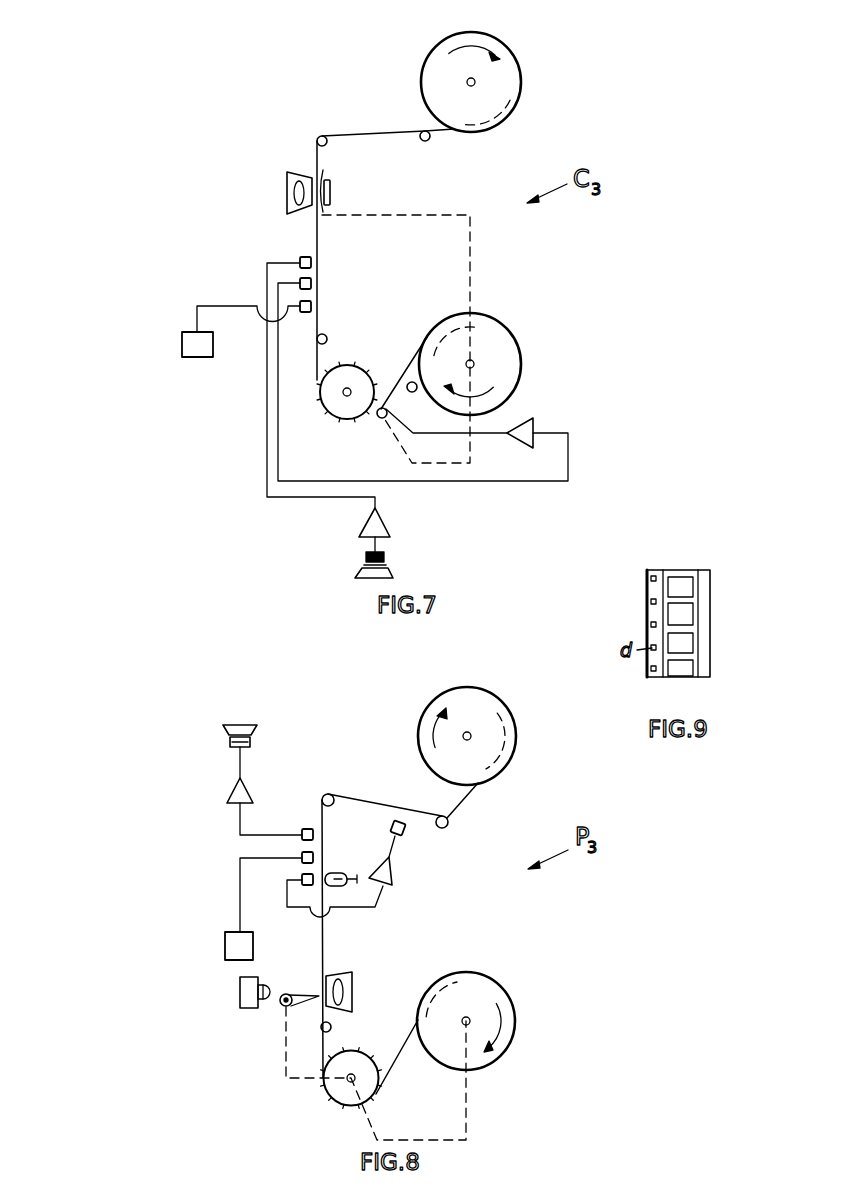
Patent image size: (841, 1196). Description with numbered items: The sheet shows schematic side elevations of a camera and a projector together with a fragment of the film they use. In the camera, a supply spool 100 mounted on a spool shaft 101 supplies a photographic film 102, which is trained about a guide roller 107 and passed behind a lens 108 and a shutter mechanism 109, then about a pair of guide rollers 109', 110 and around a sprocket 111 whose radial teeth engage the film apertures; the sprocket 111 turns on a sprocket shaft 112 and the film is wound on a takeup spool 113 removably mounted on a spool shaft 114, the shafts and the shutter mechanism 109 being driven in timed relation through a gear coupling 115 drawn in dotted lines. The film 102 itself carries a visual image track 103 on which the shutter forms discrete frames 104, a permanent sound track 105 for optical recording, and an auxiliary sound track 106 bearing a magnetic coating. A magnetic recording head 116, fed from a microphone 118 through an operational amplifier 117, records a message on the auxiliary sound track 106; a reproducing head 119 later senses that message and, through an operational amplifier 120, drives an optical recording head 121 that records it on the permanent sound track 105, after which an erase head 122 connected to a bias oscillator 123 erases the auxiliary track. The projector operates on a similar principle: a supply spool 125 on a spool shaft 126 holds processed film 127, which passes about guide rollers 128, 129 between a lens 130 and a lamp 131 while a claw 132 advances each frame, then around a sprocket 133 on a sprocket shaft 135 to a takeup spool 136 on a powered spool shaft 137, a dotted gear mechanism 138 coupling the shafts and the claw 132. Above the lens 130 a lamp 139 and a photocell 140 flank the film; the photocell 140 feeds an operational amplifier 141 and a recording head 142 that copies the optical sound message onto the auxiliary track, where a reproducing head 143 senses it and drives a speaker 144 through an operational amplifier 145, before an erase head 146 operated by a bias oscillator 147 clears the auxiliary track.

In FIG. 7, the supply spool 100 is at (497, 70).
In FIG. 7, the spool shaft 101 is at (467, 79).
In FIG. 7, the photographic film 102 is at (360, 137).
In FIG. 9, the photographic film 102 is at (710, 643).
In FIG. 9, the visual image track 103 is at (677, 668).
In FIG. 9, the frames 104 is at (680, 587).
In FIG. 9, the permanent sound track 105 is at (707, 580).
In FIG. 9, the auxiliary sound track 106 is at (663, 572).
In FIG. 7, the guide roller 107 is at (422, 132).
In FIG. 7, the lens 108 is at (288, 176).
In FIG. 7, the shutter mechanism 109 is at (353, 188).
In FIG. 7, the guide roller 109' is at (348, 329).
In FIG. 7, the guide roller 110 is at (415, 392).
In FIG. 7, the sprocket 111 is at (370, 380).
In FIG. 7, the sprocket shaft 112 is at (349, 387).
In FIG. 7, the takeup spool 113 is at (507, 360).
In FIG. 7, the spool shaft 114 is at (473, 362).
In FIG. 7, the gear coupling 115 is at (472, 458).
In FIG. 7, the magnetic recording head 116 is at (300, 260).
In FIG. 7, the operational amplifier 117 is at (378, 523).
In FIG. 7, the microphone 118 is at (388, 568).
In FIG. 7, the reproducing head 119 is at (311, 282).
In FIG. 7, the operational amplifier 120 is at (533, 423).
In FIG. 7, the optical recording head 121 is at (380, 418).
In FIG. 7, the erase head 122 is at (305, 313).
In FIG. 7, the bias oscillator 123 is at (197, 345).
In FIG. 8, the supply spool 125 is at (428, 723).
In FIG. 8, the spool shaft 126 is at (465, 733).
In FIG. 8, the film 127 is at (468, 805).
In FIG. 8, the guide roller 128 is at (437, 817).
In FIG. 8, the guide roller 129 is at (332, 1027).
In FIG. 8, the lens 130 is at (353, 980).
In FIG. 8, the lamp 131 is at (250, 987).
In FIG. 8, the claw 132 is at (302, 996).
In FIG. 8, the sprocket 133 is at (362, 1088).
In FIG. 8, the sprocket shaft 135 is at (350, 1082).
In FIG. 8, the takeup spool 136 is at (487, 1007).
In FIG. 8, the spool shaft 137 is at (469, 1023).
In FIG. 8, the gear mechanism 138 is at (468, 1113).
In FIG. 8, the lamp 139 is at (338, 874).
In FIG. 8, the photocell 140 is at (302, 878).
In FIG. 8, the operational amplifier 141 is at (392, 877).
In FIG. 8, the recording head 142 is at (405, 833).
In FIG. 8, the reproducing head 143 is at (306, 829).
In FIG. 8, the speaker 144 is at (237, 723).
In FIG. 8, the operational amplifier 145 is at (237, 793).
In FIG. 8, the erase head 146 is at (302, 856).
In FIG. 8, the bias oscillator 147 is at (232, 948).